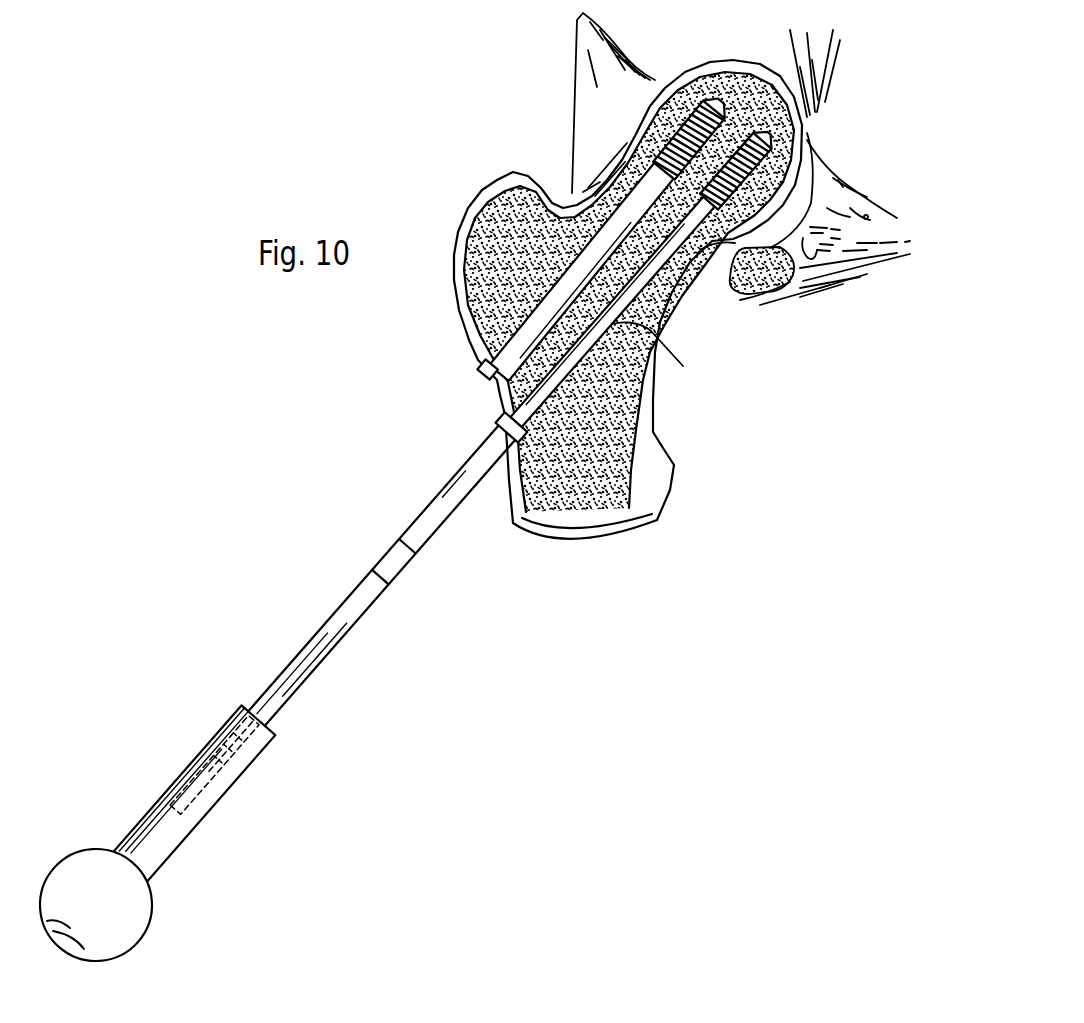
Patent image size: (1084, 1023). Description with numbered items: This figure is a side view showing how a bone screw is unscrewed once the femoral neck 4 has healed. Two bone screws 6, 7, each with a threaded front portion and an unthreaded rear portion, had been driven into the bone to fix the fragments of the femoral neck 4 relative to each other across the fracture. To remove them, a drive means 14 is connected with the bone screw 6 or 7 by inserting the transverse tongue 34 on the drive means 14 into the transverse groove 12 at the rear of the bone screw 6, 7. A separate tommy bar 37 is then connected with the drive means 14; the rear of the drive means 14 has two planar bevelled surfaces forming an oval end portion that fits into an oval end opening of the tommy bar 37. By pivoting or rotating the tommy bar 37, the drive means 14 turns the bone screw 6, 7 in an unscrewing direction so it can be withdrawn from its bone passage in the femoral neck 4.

The femoral neck 4 is at (556, 166).
The bone screw 6 is at (497, 197).
The bone screw 7 is at (683, 366).
The transverse groove 12 is at (504, 411).
The drive means 14 is at (343, 626).
The transverse tongue 34 is at (507, 430).
The tommy bar 37 is at (187, 771).